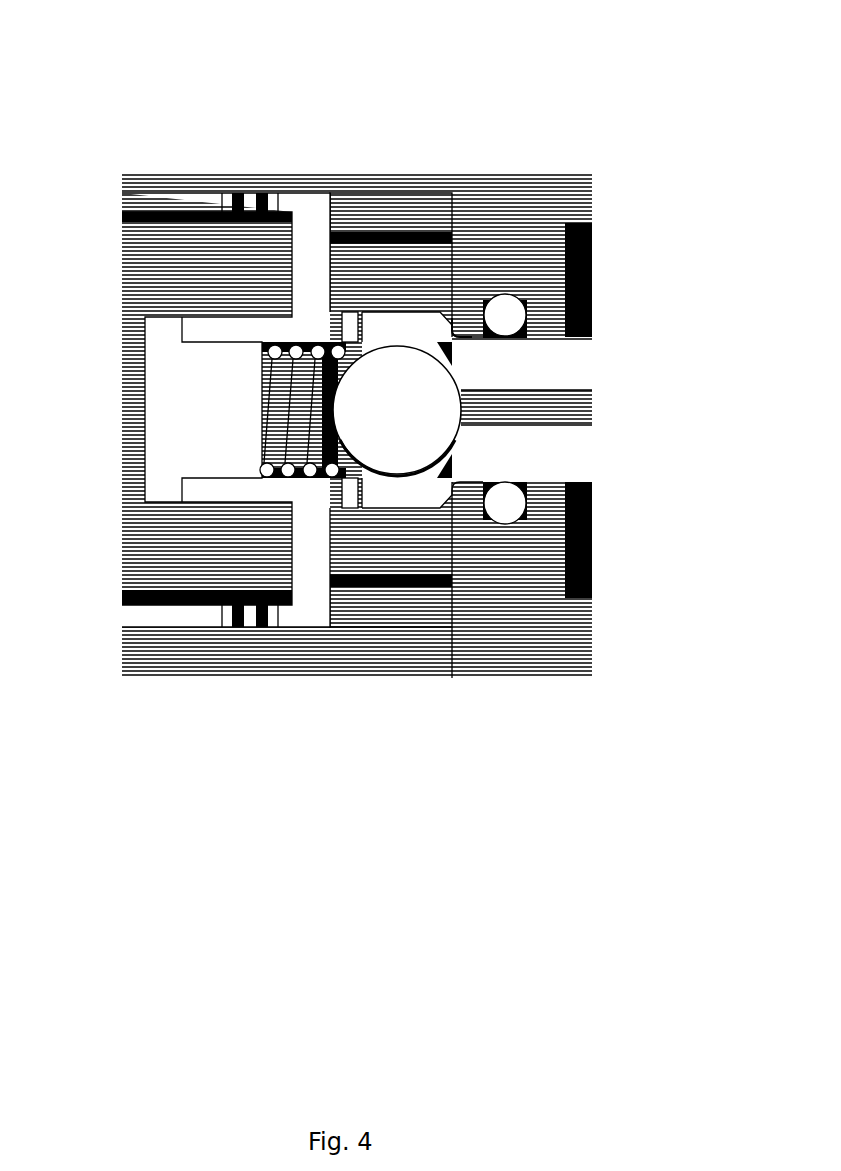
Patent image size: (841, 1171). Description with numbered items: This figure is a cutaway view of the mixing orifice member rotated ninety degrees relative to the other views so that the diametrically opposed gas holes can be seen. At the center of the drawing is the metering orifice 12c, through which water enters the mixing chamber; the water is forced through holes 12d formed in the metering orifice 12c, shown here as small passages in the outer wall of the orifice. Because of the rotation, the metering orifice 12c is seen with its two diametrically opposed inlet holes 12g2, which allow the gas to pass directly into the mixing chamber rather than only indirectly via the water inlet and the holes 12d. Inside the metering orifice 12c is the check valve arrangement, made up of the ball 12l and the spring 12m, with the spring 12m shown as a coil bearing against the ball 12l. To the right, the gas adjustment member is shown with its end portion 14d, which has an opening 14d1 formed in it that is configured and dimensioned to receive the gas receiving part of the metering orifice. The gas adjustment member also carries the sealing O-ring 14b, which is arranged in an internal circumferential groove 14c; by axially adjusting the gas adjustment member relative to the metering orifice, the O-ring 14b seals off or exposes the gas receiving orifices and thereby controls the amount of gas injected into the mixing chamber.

The metering orifice 12c is at (164, 643).
The holes 12d is at (216, 182).
The diametrically opposed inlet holes 12g2 is at (353, 297).
The spring 12m is at (284, 488).
The ball 12l is at (404, 420).
The end portion 14d is at (464, 287).
The opening 14d1 is at (475, 323).
The O-ring 14b is at (518, 308).
The internal circumferential groove 14c is at (551, 505).